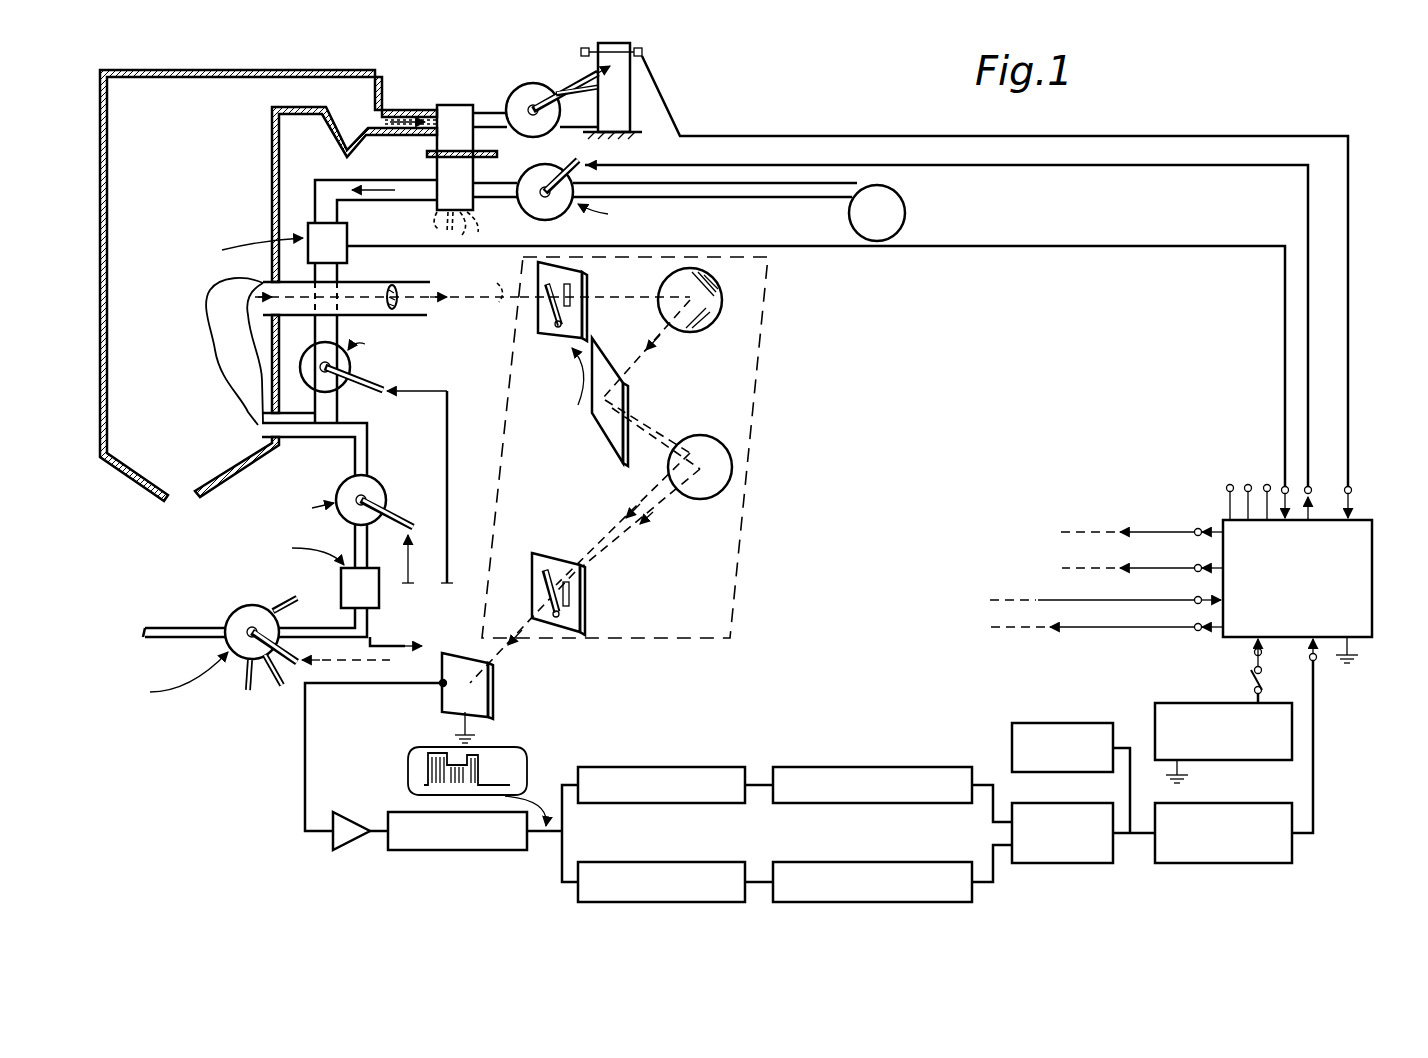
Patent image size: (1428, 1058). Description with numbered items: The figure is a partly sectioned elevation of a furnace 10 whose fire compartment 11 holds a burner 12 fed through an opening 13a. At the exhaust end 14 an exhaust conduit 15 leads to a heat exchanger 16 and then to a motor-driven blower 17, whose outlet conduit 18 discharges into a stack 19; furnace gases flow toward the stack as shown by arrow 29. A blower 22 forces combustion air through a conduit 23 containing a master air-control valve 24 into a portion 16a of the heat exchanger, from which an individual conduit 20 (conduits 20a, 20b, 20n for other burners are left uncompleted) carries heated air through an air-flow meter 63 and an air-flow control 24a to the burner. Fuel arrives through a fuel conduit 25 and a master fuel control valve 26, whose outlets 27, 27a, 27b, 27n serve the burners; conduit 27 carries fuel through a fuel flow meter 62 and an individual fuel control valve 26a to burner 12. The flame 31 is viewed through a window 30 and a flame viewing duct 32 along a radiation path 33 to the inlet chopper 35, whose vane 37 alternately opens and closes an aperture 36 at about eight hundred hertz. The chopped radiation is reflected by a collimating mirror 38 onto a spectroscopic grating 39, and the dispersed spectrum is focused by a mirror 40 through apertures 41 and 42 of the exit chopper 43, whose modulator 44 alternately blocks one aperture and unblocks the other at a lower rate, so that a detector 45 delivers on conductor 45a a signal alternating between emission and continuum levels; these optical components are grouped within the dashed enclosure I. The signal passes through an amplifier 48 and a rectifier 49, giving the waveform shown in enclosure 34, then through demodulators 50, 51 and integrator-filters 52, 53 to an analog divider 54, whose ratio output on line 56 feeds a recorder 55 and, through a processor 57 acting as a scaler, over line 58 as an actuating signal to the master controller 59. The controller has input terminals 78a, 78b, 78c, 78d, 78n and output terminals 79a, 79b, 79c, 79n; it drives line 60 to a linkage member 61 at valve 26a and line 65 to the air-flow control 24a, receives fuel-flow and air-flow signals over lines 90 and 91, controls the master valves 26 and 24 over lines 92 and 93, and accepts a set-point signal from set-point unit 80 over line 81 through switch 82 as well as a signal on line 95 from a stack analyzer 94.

The furnace 10 is at (100, 325).
The fire compartment 11 is at (196, 185).
The burner 12 is at (258, 445).
The opening 13a is at (262, 430).
The exhaust end 14 is at (316, 293).
The exhaust conduit 15 is at (385, 112).
The heat exchanger 16 is at (475, 90).
The heat exchanger portion 16a is at (478, 170).
The motor-driven blower 17 is at (548, 86).
The conduit 18 is at (577, 108).
The stack 19 is at (630, 115).
The air conduit 20 is at (392, 165).
The air conduit 20a is at (432, 216).
The air conduit 20b is at (452, 245).
The air conduit 20n is at (480, 226).
The blower 22 is at (906, 215).
The conduit 23 is at (865, 183).
The master air-control valve 24 is at (572, 216).
The burner air-flow control 24a is at (350, 385).
The fuel conduit 25 is at (163, 627).
The master fuel flow control valve 26 is at (236, 610).
The individual fuel flow control valve 26a is at (372, 480).
The fuel conduit outlet 27 is at (330, 626).
The fuel conduit outlet 27a is at (290, 598).
The fuel conduit outlet 27b is at (280, 690).
The fuel conduit outlet 27n is at (248, 693).
The arrow 29 is at (406, 116).
The window 30 is at (390, 285).
The flame 31 is at (212, 352).
The flame viewing duct 32 is at (428, 318).
The radiation path 33 is at (488, 279).
The enclosure 34 is at (515, 748).
The inlet chopper 35 is at (590, 323).
The aperture 36 is at (572, 296).
The modulator vane 37 is at (548, 328).
The collimating mirror 38 is at (720, 290).
The spectroscopic grating 39 is at (628, 398).
The mirror 40 is at (722, 442).
The aperture 41 is at (542, 556).
The aperture 42 is at (572, 600).
The exit chopper 43 is at (586, 628).
The modulator vane 44 is at (545, 608).
The detector 45 is at (493, 700).
The conductor 45a is at (308, 772).
The amplifier 48 is at (343, 813).
The rectifier 49 is at (405, 852).
The demodulator 50 is at (712, 766).
The demodulator 51 is at (712, 861).
The integrator-filter 52 is at (922, 766).
The integrator-filter 53 is at (916, 861).
The analog divider 54 is at (1088, 864).
The recorder 55 is at (1070, 722).
The line 56 is at (1140, 842).
The processor 57 is at (1256, 803).
The line 58 is at (1314, 758).
The master control unit 59 is at (1372, 602).
The line 60 is at (411, 556).
The linkage member 61 is at (425, 518).
The fuel flow meter 62 is at (341, 587).
The burner air-flow meter 63 is at (306, 222).
The line 65 is at (448, 425).
The input terminal 78a is at (1318, 662).
The input terminal 78b is at (1254, 652).
The input terminal 78c is at (1196, 598).
The input terminal 78d is at (1282, 487).
The input terminal 78n is at (1352, 491).
The output terminal 79a is at (1195, 626).
The output terminal 79b is at (1224, 560).
The output terminal 79c is at (1202, 528).
The output terminal 79n is at (1308, 487).
The set-point unit 80 is at (1166, 703).
The line 81 is at (1262, 688).
The switch 82 is at (1250, 672).
The line 90 is at (423, 642).
The line 91 is at (995, 250).
The line 92 is at (322, 663).
The line 93 is at (1060, 170).
The stack analyzer 94 is at (645, 53).
The line 95 is at (972, 137).
The optical system I is at (758, 397).